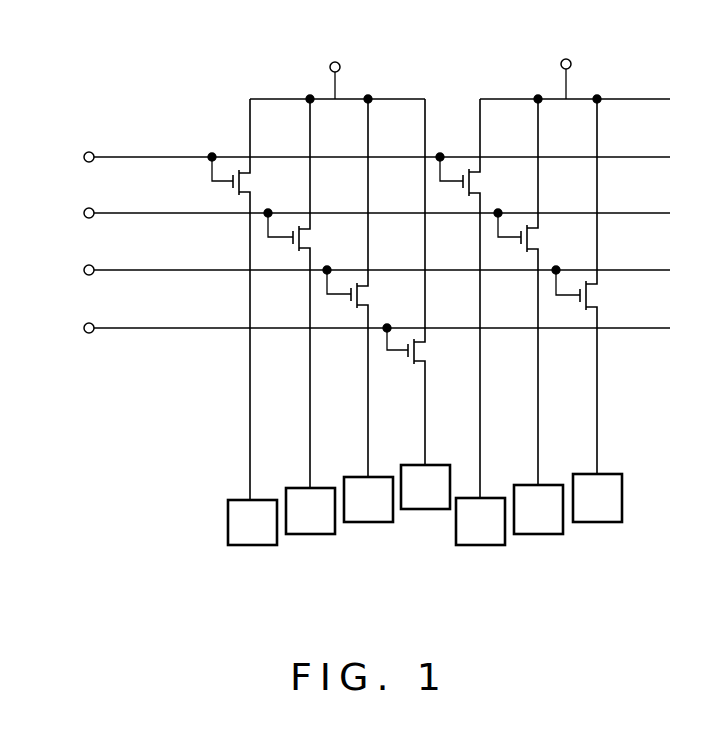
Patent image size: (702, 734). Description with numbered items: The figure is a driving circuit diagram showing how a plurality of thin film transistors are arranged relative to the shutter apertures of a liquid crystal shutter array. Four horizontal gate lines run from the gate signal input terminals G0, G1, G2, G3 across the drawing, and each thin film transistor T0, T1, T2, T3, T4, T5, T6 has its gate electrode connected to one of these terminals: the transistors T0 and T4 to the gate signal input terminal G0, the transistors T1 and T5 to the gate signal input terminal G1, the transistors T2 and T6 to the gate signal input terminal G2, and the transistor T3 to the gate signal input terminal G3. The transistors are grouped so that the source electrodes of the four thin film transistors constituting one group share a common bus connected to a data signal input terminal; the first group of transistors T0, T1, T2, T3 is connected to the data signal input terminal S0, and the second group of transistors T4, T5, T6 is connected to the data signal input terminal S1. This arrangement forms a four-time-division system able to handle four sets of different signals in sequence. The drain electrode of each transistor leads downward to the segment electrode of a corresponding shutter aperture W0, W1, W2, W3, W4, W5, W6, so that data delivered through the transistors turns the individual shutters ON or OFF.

The data signal input terminal S0 is at (337, 65).
The data signal input terminal S1 is at (575, 64).
The gate signal input terminal G0 is at (354, 156).
The gate signal input terminal G1 is at (354, 212).
The gate signal input terminal G2 is at (354, 269).
The gate signal input terminal G3 is at (354, 327).
The thin film transistor T0 is at (247, 299).
The thin film transistor T1 is at (304, 293).
The thin film transistor T2 is at (364, 288).
The thin film transistor T3 is at (422, 282).
The thin film transistor T4 is at (476, 298).
The thin film transistor T5 is at (534, 292).
The thin film transistor T6 is at (594, 286).
The shutter aperture W0 is at (252, 522).
The shutter aperture W1 is at (310, 511).
The shutter aperture W2 is at (368, 499).
The shutter aperture W3 is at (425, 487).
The shutter aperture W4 is at (480, 521).
The shutter aperture W5 is at (538, 509).
The shutter aperture W6 is at (597, 498).